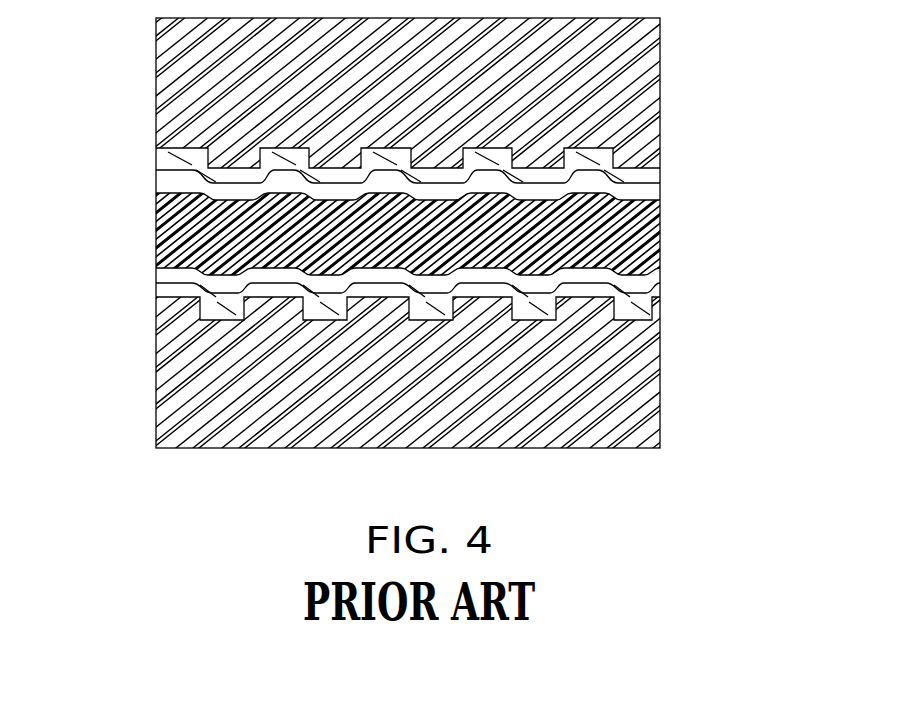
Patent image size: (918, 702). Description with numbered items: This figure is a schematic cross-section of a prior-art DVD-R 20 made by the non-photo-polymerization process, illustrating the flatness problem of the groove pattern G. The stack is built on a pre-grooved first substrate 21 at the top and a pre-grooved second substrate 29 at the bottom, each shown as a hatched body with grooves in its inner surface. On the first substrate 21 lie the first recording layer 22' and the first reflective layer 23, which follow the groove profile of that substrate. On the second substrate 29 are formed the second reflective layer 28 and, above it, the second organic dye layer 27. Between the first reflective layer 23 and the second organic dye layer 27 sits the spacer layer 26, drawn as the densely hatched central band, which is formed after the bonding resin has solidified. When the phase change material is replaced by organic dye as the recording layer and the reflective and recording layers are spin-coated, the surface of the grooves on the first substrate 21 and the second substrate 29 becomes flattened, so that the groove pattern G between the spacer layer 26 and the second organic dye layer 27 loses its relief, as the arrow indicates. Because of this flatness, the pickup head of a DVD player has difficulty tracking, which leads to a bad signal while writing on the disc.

The single side single layer DVD-R 20 is at (92, 36).
The first substrate 21 is at (660, 95).
The first recording layer 22' is at (472, 167).
The first reflective layer 23 is at (660, 190).
The spacer layer 26 is at (660, 238).
The second organic dye layer 27 is at (652, 288).
The second reflective layer 28 is at (650, 312).
The second substrate 29 is at (658, 383).
The groove pattern G is at (138, 276).